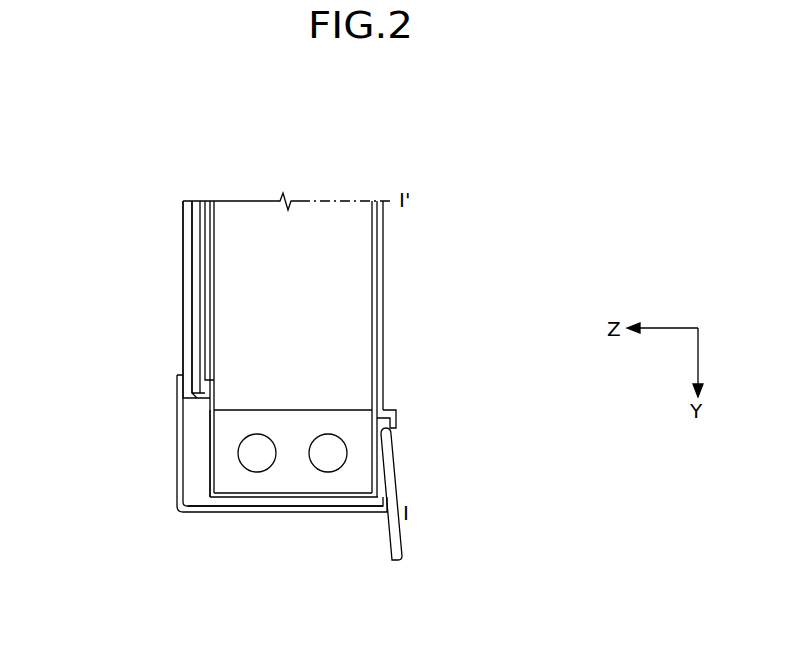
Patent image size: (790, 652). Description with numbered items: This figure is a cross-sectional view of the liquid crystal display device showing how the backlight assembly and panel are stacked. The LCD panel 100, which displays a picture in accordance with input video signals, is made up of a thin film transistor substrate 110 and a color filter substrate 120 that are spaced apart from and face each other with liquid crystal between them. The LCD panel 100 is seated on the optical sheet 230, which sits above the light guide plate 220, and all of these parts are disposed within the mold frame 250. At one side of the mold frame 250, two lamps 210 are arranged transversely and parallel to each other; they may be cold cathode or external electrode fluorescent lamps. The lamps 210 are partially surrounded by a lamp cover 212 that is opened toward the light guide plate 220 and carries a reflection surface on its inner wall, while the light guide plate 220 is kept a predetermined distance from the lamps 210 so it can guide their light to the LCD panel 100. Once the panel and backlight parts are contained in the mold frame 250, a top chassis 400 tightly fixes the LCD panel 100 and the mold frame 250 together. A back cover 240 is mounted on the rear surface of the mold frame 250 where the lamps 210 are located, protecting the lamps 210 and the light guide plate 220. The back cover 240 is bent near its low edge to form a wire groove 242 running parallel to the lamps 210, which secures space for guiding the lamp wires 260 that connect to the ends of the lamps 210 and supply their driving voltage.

The LCD panel 100 is at (112, 300).
The thin film transistor substrate 110 is at (184, 362).
The color filter substrate 120 is at (193, 311).
The optical sheet 230 is at (200, 256).
The light guide plate 220 is at (350, 318).
The back cover 240 is at (383, 275).
The wire groove 242 is at (388, 420).
The lamps 210 is at (342, 455).
The lamp cover 212 is at (213, 460).
The mold frame 250 is at (198, 498).
The top chassis 400 is at (275, 498).
The lamp wires 260 is at (392, 503).